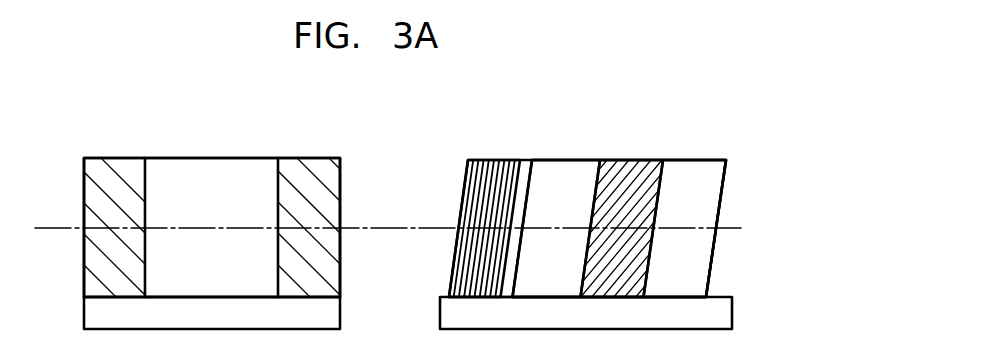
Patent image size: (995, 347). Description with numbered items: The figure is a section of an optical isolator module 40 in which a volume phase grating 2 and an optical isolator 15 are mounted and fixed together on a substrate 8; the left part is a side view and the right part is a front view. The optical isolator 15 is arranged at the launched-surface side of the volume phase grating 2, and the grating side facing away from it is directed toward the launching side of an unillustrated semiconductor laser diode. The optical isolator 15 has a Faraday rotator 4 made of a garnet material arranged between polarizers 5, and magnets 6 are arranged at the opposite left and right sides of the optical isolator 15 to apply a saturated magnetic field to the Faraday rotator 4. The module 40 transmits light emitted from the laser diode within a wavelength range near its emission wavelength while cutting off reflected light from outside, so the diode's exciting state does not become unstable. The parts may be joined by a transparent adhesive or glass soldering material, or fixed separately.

The optical isolator module 40 is at (157, 142).
The volume phase grating 2 is at (498, 160).
The Faraday rotator 4 is at (627, 165).
The polarizers 5 is at (565, 165).
The magnets 6 is at (138, 184).
The substrate 8 is at (92, 312).
The optical isolator 15 is at (250, 165).